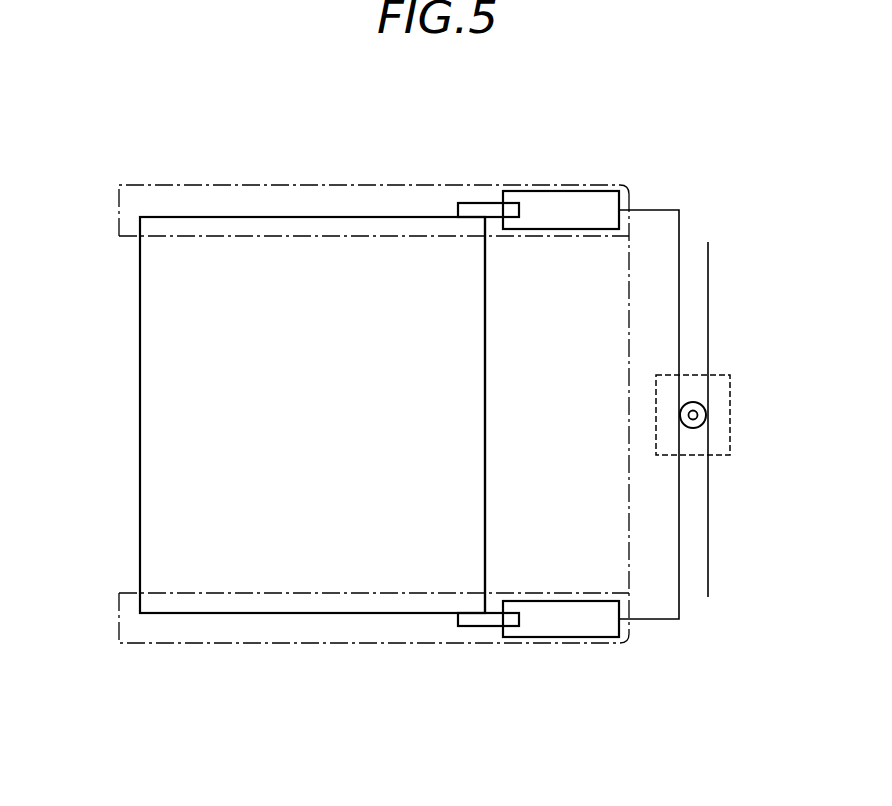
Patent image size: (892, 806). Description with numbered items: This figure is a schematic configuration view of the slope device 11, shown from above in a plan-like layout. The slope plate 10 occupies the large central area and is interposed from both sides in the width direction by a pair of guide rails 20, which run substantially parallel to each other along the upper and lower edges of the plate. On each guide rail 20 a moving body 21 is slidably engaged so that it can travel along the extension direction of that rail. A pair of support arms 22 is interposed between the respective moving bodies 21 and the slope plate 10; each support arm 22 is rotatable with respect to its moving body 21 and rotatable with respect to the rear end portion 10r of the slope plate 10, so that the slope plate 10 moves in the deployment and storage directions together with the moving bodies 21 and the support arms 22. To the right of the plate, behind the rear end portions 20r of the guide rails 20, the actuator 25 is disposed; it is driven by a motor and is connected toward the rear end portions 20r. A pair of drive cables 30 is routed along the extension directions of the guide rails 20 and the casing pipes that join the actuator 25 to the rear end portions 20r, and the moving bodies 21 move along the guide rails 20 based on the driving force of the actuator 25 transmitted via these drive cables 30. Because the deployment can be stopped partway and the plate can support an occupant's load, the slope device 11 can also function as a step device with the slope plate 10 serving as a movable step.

The slope plate 10 is at (140, 413).
The rear end portion of the slope plate 10r is at (485, 393).
The slope device 11 is at (709, 137).
The guide rail 20 is at (208, 185).
The rear end portion of the guide rail 20r is at (629, 180).
The moving body 21 is at (563, 191).
The support arm 22 is at (470, 203).
The actuator 25 is at (731, 413).
The drive cable 30 is at (679, 316).